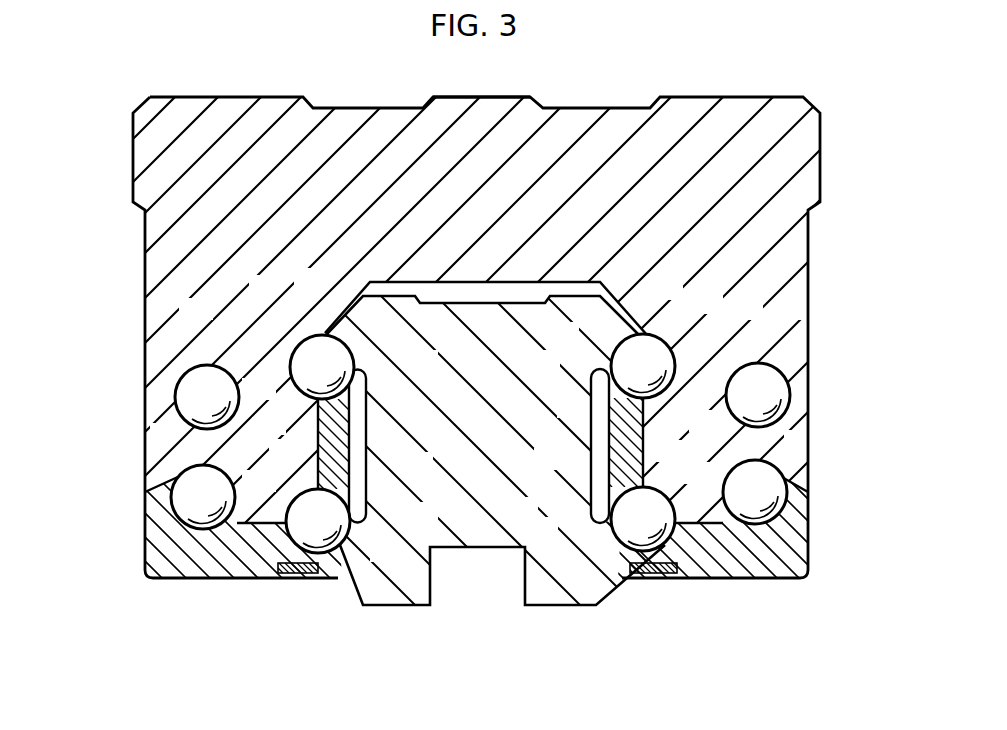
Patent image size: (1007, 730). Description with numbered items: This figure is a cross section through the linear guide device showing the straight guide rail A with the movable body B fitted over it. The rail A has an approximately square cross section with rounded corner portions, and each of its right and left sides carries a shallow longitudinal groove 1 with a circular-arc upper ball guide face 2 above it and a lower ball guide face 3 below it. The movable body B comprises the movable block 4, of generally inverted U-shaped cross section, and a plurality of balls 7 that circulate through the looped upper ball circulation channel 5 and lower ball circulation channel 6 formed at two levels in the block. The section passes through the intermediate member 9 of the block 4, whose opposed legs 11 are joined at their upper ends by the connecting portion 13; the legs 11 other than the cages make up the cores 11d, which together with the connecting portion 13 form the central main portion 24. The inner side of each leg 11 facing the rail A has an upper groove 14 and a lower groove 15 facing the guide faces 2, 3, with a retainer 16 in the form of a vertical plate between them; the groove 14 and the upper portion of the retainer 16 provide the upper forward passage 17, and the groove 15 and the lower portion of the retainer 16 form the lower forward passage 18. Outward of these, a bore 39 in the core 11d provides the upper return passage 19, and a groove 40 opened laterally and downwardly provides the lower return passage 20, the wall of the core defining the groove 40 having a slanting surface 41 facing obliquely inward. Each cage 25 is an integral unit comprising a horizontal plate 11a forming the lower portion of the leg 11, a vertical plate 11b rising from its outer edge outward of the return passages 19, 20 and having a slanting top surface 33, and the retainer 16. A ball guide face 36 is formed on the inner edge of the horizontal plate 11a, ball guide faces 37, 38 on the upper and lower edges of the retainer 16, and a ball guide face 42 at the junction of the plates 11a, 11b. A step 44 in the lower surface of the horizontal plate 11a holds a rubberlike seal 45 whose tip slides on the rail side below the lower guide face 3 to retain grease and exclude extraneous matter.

The shallow groove 1 is at (366, 397).
The upper ball guide face 2 is at (353, 352).
The lower ball guide face 3 is at (349, 538).
The movable block 4 is at (600, 100).
The upper ball circulation channel 5 is at (176, 392).
The lower ball circulation channel 6 is at (170, 448).
The ball 7 is at (300, 344).
The intermediate member 9 is at (810, 95).
The leg 11 is at (150, 580).
The horizontal plate 11a is at (185, 580).
The vertical plate 11b is at (145, 530).
The core 11d is at (245, 580).
The connecting portion 13 is at (467, 98).
The upper groove 14 is at (290, 376).
The lower groove 15 is at (312, 492).
The retainer 16 is at (350, 458).
The upper forward passage 17 is at (322, 340).
The lower forward passage 18 is at (338, 550).
The upper return passage 19 is at (206, 366).
The lower return passage 20 is at (180, 518).
The central main portion 24 is at (209, 95).
The cage 25 is at (138, 574).
The slanting top surface 33 is at (152, 483).
The ball guide face 36 is at (288, 511).
The ball guide face 37 is at (362, 361).
The ball guide face 38 is at (352, 524).
The bore 39 is at (177, 402).
The groove 40 is at (236, 462).
The slanting surface 41 is at (145, 511).
The ball guide face 42 is at (205, 560).
The step 44 is at (290, 576).
The seal 45 is at (305, 580).
The guide rail A is at (596, 610).
The movable body B is at (366, 100).